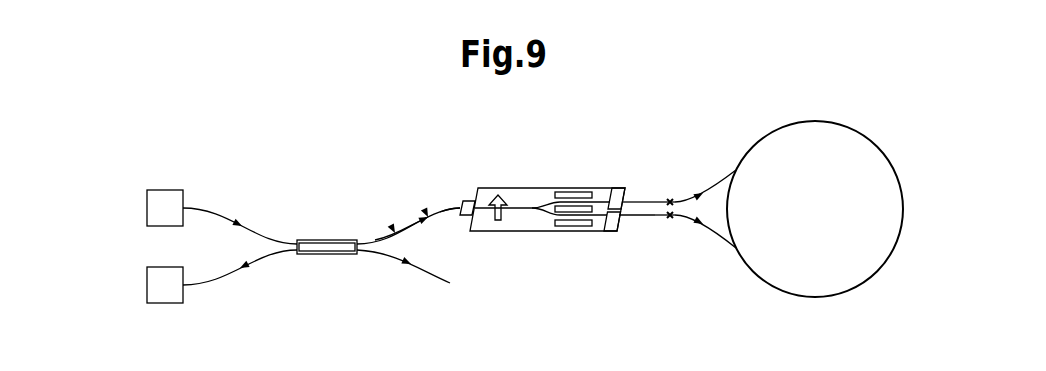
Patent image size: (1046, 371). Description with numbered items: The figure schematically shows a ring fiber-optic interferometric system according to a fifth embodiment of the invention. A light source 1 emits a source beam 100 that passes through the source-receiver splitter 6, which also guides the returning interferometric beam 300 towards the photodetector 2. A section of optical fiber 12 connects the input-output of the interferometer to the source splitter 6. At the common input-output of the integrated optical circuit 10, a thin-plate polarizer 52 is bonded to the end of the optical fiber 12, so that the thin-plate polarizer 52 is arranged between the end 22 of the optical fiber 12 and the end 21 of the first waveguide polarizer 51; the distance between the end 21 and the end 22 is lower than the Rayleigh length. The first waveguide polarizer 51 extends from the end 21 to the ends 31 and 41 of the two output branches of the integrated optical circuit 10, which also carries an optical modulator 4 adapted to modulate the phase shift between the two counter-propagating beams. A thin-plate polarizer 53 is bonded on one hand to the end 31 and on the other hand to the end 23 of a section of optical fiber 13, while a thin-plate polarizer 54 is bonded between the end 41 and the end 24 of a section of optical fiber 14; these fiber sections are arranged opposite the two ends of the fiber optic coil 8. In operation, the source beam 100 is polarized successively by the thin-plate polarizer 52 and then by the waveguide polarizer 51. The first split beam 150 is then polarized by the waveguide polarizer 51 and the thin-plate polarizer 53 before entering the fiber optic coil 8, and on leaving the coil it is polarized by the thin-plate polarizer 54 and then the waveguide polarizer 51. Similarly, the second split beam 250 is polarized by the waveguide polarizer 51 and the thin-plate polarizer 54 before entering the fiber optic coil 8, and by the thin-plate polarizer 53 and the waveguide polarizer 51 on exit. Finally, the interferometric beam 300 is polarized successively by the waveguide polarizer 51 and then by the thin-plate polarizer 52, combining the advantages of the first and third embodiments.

The light source 1 is at (147, 207).
The photodetector 2 is at (147, 285).
The source beam 100 is at (236, 221).
The interferometric beam 300 is at (242, 271).
The source-receiver splitter 6 is at (329, 254).
The optical fiber 12 is at (395, 229).
The end of the optical fiber 22 is at (447, 205).
The thin-plate polarizer 52 is at (467, 199).
The first waveguide polarizer 51 is at (504, 190).
The integrated optical circuit 10 is at (550, 188).
The end of the first waveguide polarizer 21 is at (487, 232).
The end of the first output branch 31 is at (600, 191).
The end of the second output branch 41 is at (600, 232).
The optical modulator 4 is at (572, 232).
The thin-plate polarizer 53 is at (612, 190).
The thin-plate polarizer 54 is at (610, 232).
The end of the optical fiber 23 is at (645, 200).
The end of the optical fiber 24 is at (645, 218).
The optical fiber 13 is at (650, 200).
The optical fiber 14 is at (650, 218).
The first split beam 150 is at (700, 192).
The second split beam 250 is at (700, 226).
The fiber optic coil 8 is at (893, 185).